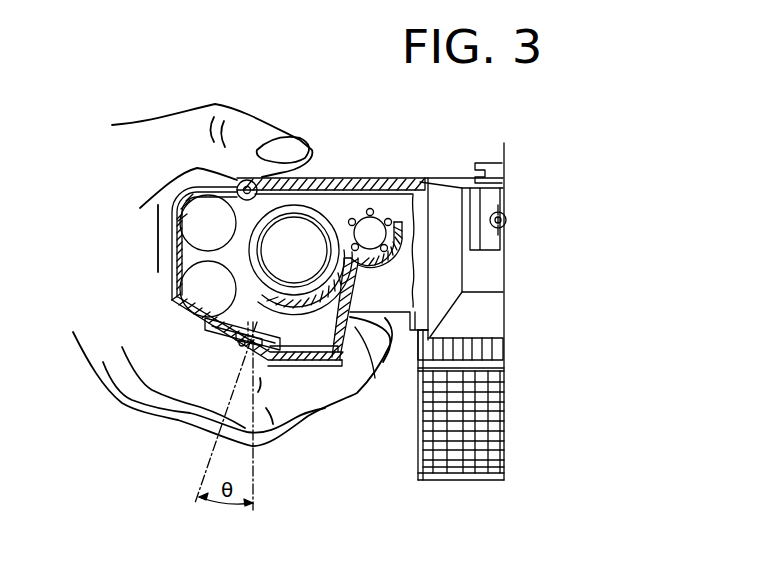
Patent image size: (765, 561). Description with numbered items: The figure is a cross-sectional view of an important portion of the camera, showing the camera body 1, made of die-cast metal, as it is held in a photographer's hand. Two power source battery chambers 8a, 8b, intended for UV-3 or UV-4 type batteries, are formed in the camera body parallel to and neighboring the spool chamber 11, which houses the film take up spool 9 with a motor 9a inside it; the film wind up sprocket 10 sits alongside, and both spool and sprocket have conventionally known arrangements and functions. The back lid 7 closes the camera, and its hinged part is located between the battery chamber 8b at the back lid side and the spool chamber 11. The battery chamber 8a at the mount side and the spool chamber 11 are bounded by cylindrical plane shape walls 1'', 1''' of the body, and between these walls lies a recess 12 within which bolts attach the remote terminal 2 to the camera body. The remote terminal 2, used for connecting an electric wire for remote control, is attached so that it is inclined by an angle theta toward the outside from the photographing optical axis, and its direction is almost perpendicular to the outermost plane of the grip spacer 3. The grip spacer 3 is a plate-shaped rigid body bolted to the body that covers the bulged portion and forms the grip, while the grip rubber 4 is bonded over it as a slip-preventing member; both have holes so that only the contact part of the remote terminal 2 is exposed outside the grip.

The camera body 1 is at (181, 243).
The cylindrical plane shape wall 1'' is at (238, 327).
The cylindrical plane shape wall 1''' is at (304, 372).
The remote terminal 2 is at (262, 343).
The grip spacer 3 is at (325, 362).
The grip rubber 4 is at (370, 352).
The back lid 7 is at (358, 178).
The power source battery chamber 8a is at (197, 291).
The power source battery chamber 8b is at (197, 225).
The film take up spool 9 is at (310, 215).
The motor 9a is at (317, 265).
The film wind up sprocket 10 is at (373, 212).
The spool chamber 11 is at (248, 242).
The recess 12 is at (233, 337).